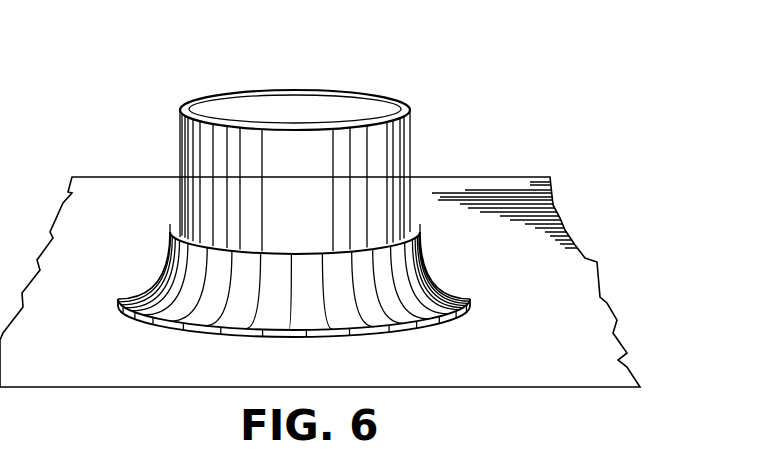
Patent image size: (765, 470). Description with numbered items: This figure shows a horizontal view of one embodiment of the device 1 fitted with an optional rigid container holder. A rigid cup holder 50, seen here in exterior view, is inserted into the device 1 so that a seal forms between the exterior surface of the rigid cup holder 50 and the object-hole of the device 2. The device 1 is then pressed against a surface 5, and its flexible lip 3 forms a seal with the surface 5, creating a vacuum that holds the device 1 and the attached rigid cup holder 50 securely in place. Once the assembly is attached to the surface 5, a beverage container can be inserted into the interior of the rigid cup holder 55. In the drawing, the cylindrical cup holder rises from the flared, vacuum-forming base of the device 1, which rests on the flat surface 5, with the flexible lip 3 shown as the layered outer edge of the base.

The device 1 is at (190, 272).
The object-hole of the device 2 is at (360, 243).
The flexible lip 3 is at (480, 292).
The surface 5 is at (128, 190).
The rigid cup holder (exterior view) 50 is at (375, 150).
The rigid cup holder (interior view) 55 is at (300, 106).